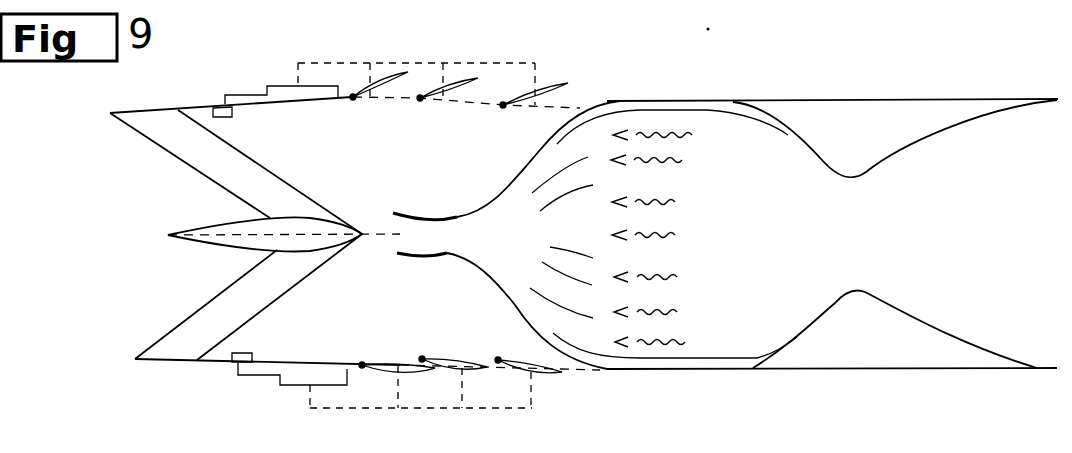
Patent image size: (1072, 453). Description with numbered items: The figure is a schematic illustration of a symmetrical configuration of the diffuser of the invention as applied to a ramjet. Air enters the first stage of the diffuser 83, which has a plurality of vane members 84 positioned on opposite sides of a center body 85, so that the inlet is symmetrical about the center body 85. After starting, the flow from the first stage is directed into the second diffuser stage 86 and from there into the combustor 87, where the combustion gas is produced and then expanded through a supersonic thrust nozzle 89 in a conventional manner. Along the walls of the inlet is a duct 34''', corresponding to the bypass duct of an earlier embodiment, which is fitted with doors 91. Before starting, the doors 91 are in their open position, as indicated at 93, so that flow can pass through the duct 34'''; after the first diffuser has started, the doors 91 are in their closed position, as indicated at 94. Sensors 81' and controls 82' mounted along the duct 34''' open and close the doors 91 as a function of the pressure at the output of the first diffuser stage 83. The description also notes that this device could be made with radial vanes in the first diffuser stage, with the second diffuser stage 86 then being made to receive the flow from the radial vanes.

The duct 34''' is at (355, 233).
The sensors 81' is at (218, 244).
The controls 82' is at (286, 242).
The first stage of the diffuser 83 is at (178, 325).
The vane members 84 is at (207, 182).
The center body 85 is at (172, 236).
The second diffuser stage 86 is at (430, 230).
The combustor 87 is at (758, 239).
The supersonic thrust nozzle 89 is at (984, 251).
The doors 91 is at (392, 76).
The open position 93 is at (580, 92).
The closed position 94 is at (546, 377).